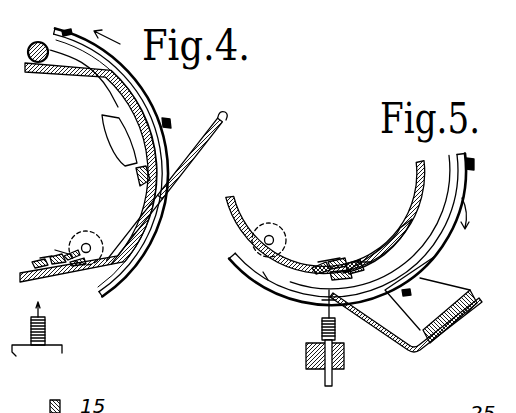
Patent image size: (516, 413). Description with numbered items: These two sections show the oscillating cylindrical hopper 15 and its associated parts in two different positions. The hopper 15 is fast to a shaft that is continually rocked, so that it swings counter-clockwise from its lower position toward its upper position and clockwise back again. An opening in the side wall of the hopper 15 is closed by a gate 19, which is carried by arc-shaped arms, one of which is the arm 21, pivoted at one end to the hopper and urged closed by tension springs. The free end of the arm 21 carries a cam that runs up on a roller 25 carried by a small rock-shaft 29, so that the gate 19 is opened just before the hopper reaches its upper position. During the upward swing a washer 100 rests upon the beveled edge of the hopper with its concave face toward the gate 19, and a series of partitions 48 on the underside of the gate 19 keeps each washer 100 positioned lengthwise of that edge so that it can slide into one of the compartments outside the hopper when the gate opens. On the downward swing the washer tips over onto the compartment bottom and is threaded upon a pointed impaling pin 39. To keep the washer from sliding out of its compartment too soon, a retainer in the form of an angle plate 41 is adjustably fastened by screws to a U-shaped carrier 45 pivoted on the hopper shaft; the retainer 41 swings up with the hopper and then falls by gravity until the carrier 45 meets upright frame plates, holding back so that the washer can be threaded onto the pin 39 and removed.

In FIG. 4, the cylindrical hopper 15 is at (73, 283).
In FIG. 5, the cylindrical hopper 15 is at (233, 210).
In FIG. 4, the gate 19 is at (137, 130).
In FIG. 5, the gate 19 is at (427, 220).
In FIG. 4, the arc-shaped arm 21 is at (146, 256).
In FIG. 5, the arc-shaped arm 21 is at (247, 270).
In FIG. 4, the roller 25 is at (30, 43).
In FIG. 5, the roller 25 is at (273, 242).
In FIG. 4, the rock-shaft 29 is at (44, 44).
In FIG. 4, the impaling pin 39 is at (42, 306).
In FIG. 5, the impaling pin 39 is at (312, 373).
In FIG. 4, the angle plate retainer 41 is at (226, 126).
In FIG. 5, the angle plate retainer 41 is at (388, 340).
In FIG. 5, the carrier 45 is at (464, 318).
In FIG. 4, the partition 48 is at (110, 127).
In FIG. 4, the washer 100 is at (137, 163).